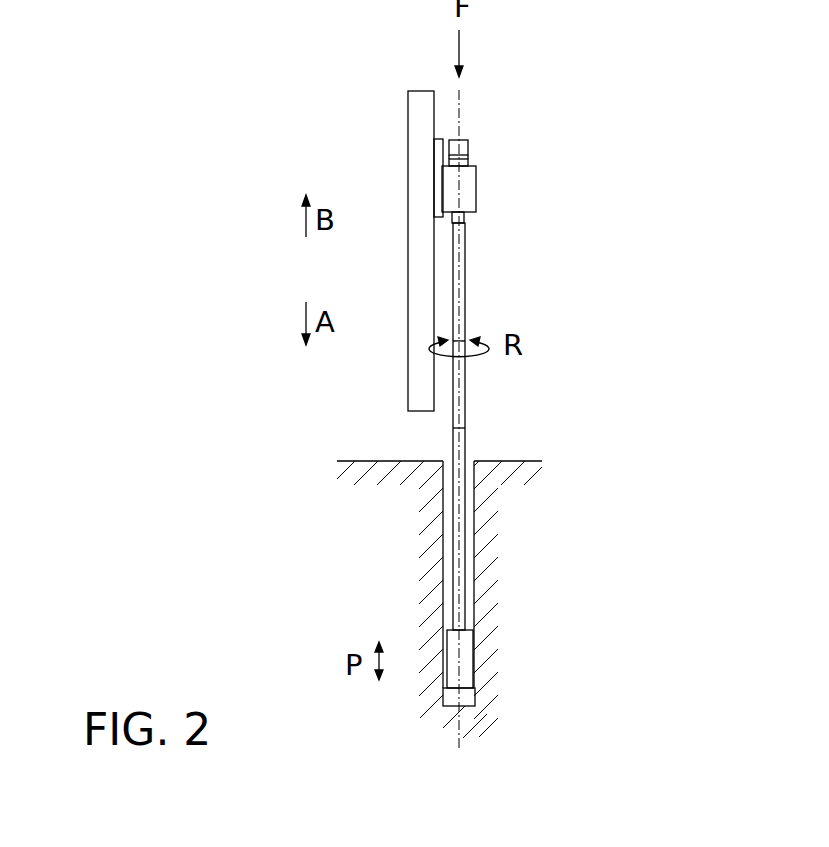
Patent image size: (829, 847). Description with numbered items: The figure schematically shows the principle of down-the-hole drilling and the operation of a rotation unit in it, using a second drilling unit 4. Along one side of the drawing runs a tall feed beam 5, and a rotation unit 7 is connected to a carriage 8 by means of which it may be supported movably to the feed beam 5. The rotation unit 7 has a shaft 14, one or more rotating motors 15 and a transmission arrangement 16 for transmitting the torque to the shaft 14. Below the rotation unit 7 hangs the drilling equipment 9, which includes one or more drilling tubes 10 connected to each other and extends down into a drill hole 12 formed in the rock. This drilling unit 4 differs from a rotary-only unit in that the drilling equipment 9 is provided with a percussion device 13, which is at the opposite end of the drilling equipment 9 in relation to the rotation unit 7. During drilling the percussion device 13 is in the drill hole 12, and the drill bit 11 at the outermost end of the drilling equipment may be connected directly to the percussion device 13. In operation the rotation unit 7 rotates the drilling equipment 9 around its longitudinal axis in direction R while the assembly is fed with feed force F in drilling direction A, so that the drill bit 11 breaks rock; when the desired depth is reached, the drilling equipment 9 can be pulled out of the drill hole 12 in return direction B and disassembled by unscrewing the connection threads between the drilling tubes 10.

The drilling unit 4 is at (558, 82).
The feed beam 5 is at (420, 157).
The rotation unit 7 is at (518, 190).
The carriage 8 is at (439, 197).
The drilling equipment 9 is at (556, 397).
The drilling tube 10 is at (462, 298).
The drill bit 11 is at (467, 697).
The drill hole 12 is at (450, 507).
The percussion device 13 is at (467, 654).
The shaft 14 is at (470, 195).
The rotating motor 15 is at (469, 141).
The transmission arrangement 16 is at (469, 160).